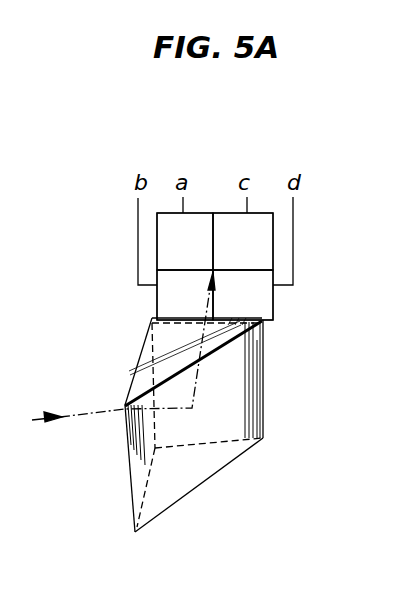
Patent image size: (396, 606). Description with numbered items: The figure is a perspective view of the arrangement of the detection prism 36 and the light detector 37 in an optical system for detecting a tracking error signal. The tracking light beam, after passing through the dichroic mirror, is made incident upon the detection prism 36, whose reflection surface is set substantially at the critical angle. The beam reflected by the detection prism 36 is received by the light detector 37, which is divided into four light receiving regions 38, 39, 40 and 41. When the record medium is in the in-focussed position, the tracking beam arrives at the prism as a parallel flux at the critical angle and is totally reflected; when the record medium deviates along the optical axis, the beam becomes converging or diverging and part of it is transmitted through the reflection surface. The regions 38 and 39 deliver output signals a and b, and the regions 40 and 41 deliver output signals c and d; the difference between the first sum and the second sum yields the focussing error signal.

The detection prism 36 is at (217, 462).
The light detector 37 is at (138, 290).
The light receiving region 38 is at (170, 243).
The light receiving region 39 is at (160, 298).
The light receiving region 40 is at (268, 237).
The light receiving region 41 is at (262, 300).